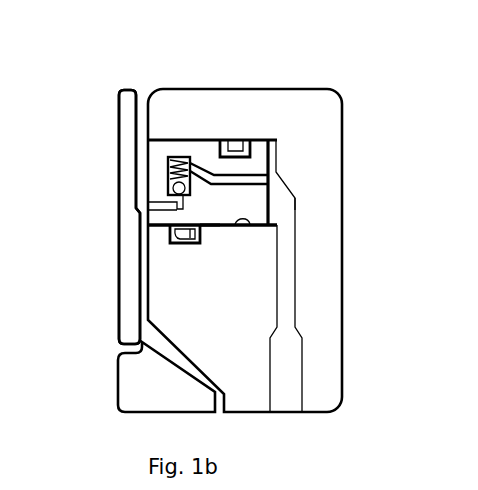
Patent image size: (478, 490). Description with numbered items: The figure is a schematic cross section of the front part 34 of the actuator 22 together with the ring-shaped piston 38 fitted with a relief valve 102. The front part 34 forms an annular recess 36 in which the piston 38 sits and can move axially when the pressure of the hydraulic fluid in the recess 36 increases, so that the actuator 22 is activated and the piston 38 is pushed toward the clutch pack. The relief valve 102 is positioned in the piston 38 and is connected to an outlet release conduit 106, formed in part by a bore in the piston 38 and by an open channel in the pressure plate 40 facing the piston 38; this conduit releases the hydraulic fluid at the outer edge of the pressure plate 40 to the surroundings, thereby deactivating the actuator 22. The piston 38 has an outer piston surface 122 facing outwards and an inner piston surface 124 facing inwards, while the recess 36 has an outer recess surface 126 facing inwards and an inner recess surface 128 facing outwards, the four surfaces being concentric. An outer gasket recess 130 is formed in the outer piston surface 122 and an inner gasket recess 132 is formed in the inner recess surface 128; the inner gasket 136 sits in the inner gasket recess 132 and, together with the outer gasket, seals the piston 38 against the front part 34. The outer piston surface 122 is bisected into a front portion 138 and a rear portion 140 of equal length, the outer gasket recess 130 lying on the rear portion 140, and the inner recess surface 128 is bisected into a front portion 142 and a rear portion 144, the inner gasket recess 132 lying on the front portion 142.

The actuator 22 is at (280, 155).
The front part 34 is at (314, 228).
The annular recess 36 is at (277, 217).
The ring-shaped piston 38 is at (257, 198).
The pressure plate 40 is at (128, 217).
The relief valve 102 is at (166, 185).
The outlet release conduit 106 is at (143, 153).
The outer piston surface 122 is at (210, 140).
The inner piston surface 124 is at (220, 227).
The outer recess surface 126 is at (182, 141).
The inner recess surface 128 is at (277, 229).
The outer gasket recess 130 is at (238, 140).
The inner gasket recess 132 is at (170, 240).
The inner gasket 136 is at (192, 243).
The front portion 138 is at (163, 140).
The rear portion 140 is at (258, 139).
The front portion 142 is at (168, 228).
The rear portion 144 is at (252, 227).